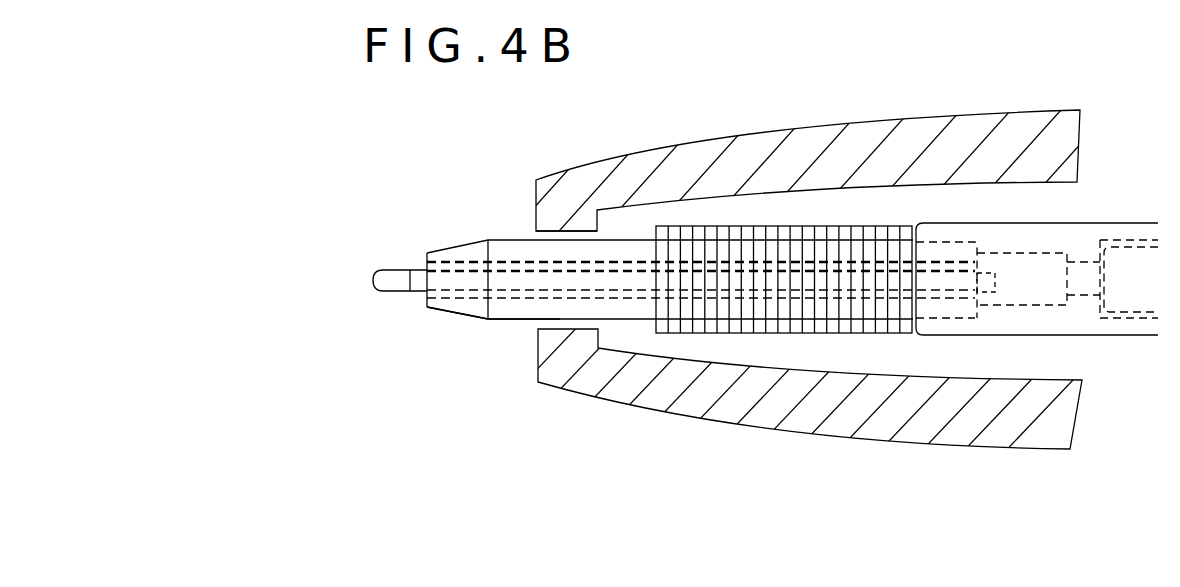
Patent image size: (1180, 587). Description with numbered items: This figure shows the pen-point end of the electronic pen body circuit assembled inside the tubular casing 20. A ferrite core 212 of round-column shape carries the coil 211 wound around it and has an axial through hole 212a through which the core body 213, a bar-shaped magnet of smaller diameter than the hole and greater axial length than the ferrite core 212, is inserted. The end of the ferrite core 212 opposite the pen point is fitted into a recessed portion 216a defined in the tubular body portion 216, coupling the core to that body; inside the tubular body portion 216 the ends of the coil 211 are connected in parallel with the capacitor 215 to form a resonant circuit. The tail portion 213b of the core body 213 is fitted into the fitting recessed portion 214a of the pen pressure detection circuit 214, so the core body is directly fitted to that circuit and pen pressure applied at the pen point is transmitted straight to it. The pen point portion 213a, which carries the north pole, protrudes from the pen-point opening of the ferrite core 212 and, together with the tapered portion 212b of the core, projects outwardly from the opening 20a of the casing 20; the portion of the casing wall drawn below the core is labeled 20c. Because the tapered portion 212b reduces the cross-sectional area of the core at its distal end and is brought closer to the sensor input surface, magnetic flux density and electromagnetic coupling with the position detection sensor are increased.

The casing 20 is at (802, 150).
The opening 20a is at (540, 238).
The lower housing wall 20c is at (731, 210).
The coil 211 is at (780, 335).
The ferrite core 212 is at (628, 232).
The through hole 212a is at (512, 298).
The tapered portion 212b is at (442, 312).
The core body 213 is at (418, 272).
The pen point portion 213a is at (373, 281).
The tail portion 213b is at (995, 283).
The pen pressure detection circuit 214 is at (1052, 293).
The fitting recessed portion 214a is at (993, 288).
The capacitor 215 is at (1127, 297).
The tubular body portion 216 is at (945, 222).
The recessed portion 216a is at (947, 322).